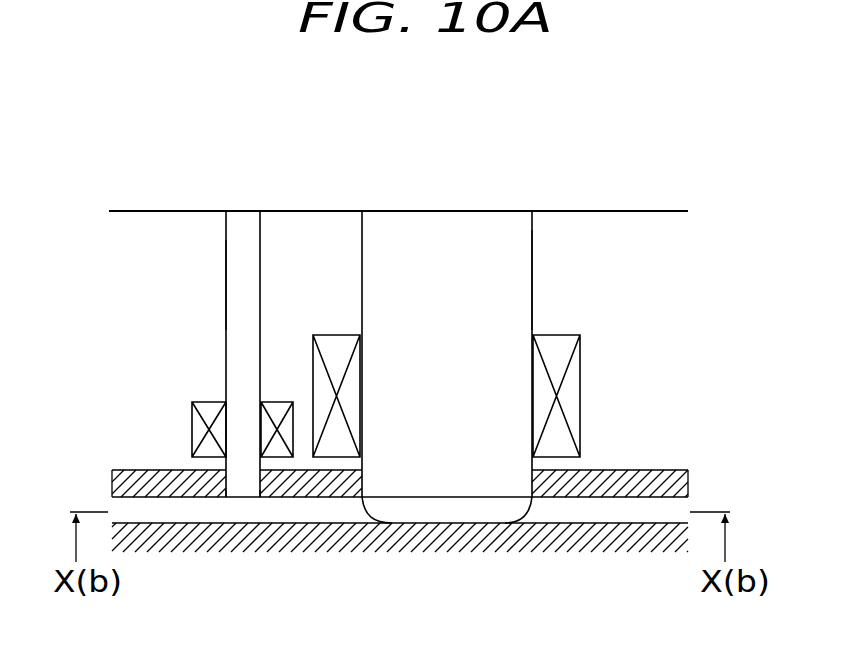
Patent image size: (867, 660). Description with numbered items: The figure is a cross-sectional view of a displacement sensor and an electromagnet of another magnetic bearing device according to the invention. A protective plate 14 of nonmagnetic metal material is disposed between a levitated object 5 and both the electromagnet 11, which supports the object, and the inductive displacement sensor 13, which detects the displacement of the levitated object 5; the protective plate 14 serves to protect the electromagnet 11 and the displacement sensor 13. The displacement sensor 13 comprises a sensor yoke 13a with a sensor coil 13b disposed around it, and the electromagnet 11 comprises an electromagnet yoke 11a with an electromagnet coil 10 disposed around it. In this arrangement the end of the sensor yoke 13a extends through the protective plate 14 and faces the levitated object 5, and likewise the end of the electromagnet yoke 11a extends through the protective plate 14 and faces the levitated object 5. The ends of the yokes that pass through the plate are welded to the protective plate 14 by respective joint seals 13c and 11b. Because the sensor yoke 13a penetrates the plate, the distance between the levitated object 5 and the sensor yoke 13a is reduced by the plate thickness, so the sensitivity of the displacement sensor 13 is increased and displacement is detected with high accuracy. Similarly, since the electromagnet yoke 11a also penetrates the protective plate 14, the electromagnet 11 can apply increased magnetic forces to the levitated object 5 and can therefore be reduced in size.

The levitated object 5 is at (377, 536).
The electromagnet coil 10 is at (582, 370).
The electromagnet 11 is at (447, 364).
The electromagnet yoke 11a is at (494, 258).
The joint seal 11b is at (505, 524).
The displacement sensor 13 is at (187, 371).
The sensor yoke 13a is at (228, 285).
The sensor coil 13b is at (192, 420).
The joint seal 13c is at (260, 498).
The protective plate 14 is at (657, 469).